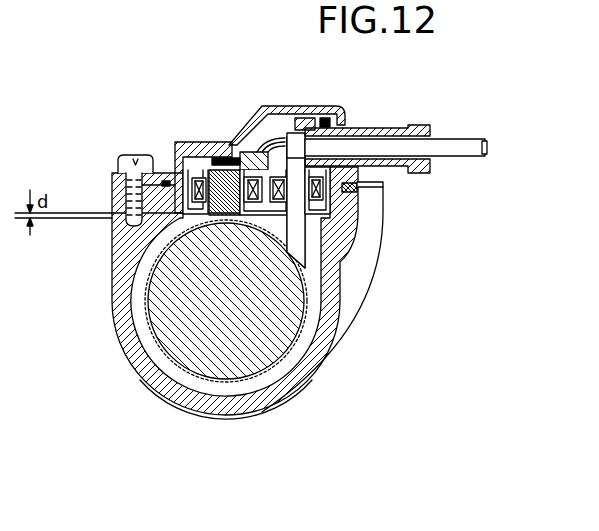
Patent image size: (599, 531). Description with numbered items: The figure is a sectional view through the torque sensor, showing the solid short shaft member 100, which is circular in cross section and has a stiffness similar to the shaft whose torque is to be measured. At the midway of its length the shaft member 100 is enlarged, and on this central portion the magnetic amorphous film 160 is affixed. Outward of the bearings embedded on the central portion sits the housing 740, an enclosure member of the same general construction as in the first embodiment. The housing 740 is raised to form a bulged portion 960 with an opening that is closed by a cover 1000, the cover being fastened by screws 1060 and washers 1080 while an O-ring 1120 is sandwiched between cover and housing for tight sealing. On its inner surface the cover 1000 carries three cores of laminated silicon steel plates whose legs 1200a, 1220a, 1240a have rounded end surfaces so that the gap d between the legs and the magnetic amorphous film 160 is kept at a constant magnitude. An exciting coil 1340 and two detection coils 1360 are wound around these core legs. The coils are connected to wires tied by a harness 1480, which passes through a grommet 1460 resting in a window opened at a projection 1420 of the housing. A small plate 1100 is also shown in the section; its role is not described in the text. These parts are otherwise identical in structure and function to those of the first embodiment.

The solid short shaft member 100 is at (300, 328).
The magnetic amorphous film 160 is at (292, 366).
The housing 740 is at (194, 413).
The bulged portion 960 is at (383, 215).
The cover 1000 is at (175, 147).
The screws 1060 is at (123, 163).
The washers 1080 is at (115, 172).
The plate 1100 is at (383, 185).
The O-ring 1120 is at (163, 182).
The core leg 1200a is at (228, 172).
The core leg 1220a is at (305, 245).
The core leg 1240a is at (405, 229).
The exciting coil 1340 is at (200, 172).
The detection coils 1360 is at (330, 192).
The projection 1420 is at (273, 107).
The grommet 1460 is at (377, 128).
The harness 1480 is at (473, 140).